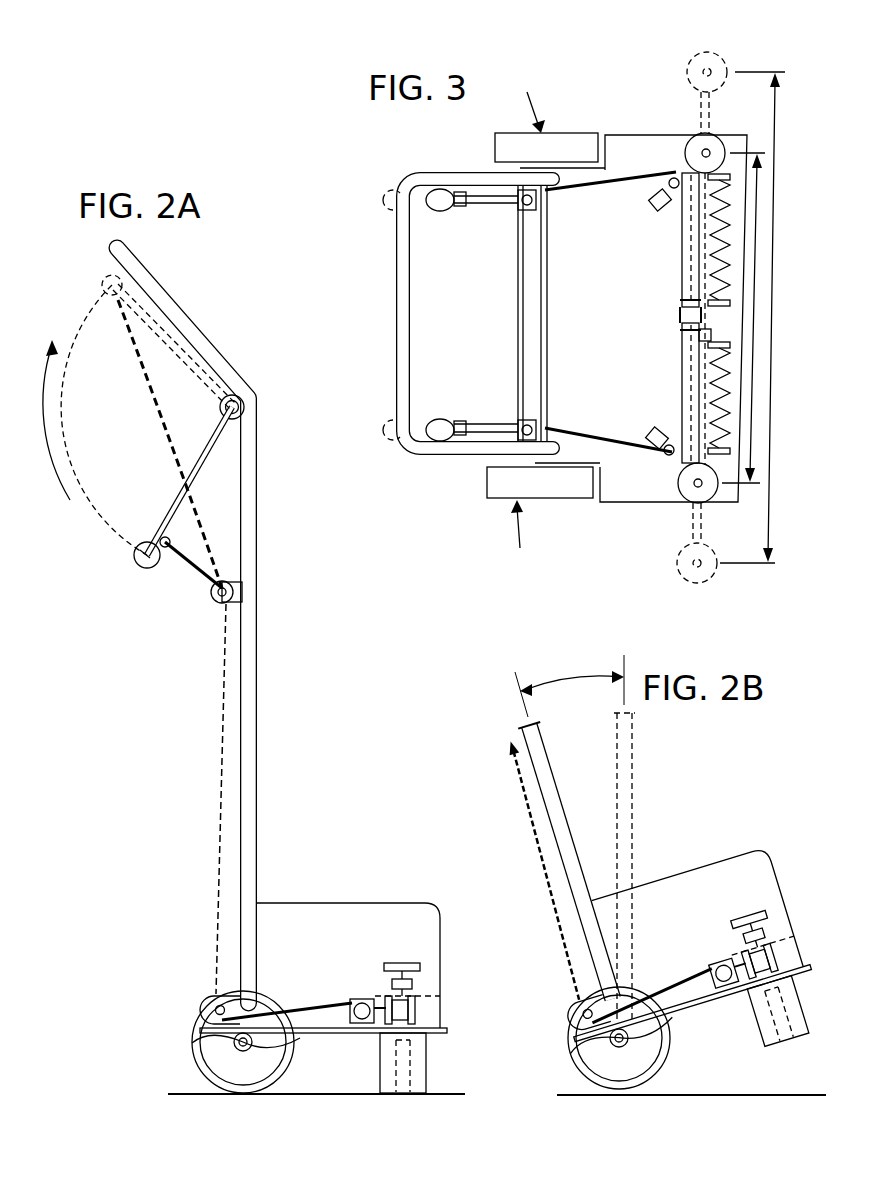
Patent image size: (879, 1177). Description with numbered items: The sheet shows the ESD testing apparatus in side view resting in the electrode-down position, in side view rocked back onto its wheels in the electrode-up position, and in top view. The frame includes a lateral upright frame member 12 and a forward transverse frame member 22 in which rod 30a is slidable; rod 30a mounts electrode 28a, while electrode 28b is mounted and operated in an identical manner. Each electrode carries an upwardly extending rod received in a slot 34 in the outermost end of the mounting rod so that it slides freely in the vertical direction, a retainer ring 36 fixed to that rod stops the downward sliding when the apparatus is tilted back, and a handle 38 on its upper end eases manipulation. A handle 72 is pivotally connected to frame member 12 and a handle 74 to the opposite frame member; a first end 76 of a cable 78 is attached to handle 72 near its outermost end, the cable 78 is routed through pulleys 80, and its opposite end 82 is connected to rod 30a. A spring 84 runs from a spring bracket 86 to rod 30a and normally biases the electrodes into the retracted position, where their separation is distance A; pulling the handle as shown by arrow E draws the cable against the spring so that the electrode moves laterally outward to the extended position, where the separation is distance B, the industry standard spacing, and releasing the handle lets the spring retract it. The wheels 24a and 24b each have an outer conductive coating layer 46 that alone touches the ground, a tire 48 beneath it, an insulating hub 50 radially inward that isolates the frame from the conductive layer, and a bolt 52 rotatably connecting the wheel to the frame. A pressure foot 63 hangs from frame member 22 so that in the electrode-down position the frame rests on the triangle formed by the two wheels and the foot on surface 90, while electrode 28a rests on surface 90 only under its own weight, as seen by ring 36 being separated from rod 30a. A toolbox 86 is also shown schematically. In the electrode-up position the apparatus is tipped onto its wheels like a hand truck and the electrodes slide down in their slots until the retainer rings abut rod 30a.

In FIG. 2A, the lateral upright frame member 12 is at (258, 705).
In FIG. 2B, the lateral upright frame member 12 is at (548, 770).
In FIG. 3, the lateral upright frame member 12 is at (478, 313).
In FIG. 2A, the forward transverse frame member 22 is at (430, 996).
In FIG. 2B, the forward transverse frame member 22 is at (785, 965).
In FIG. 3, the forward transverse frame member 22 is at (680, 287).
In FIG. 3, the wheel 24a is at (525, 536).
In FIG. 3, the wheel 24b is at (540, 101).
In FIG. 2A, the electrode 28a is at (385, 1055).
In FIG. 2B, the electrode 28a is at (760, 1040).
In FIG. 3, the electrode 28a is at (685, 492).
In FIG. 3, the electrode 28b is at (685, 75).
In FIG. 2A, the rod 30a is at (418, 1012).
In FIG. 2B, the rod 30a is at (735, 993).
In FIG. 3, the rod 30a is at (715, 340).
In FIG. 2A, the slot 34 is at (395, 998).
In FIG. 2B, the slot 34 is at (740, 975).
In FIG. 2A, the retainer ring 36 is at (415, 988).
In FIG. 2B, the retainer ring 36 is at (775, 950).
In FIG. 2A, the handle 38 is at (410, 965).
In FIG. 2B, the handle 38 is at (760, 928).
In FIG. 2A, the conductive coating layer 46 is at (272, 1095).
In FIG. 2B, the conductive coating layer 46 is at (643, 1090).
In FIG. 3, the conductive coating layer 46 is at (500, 145).
In FIG. 2A, the tire 48 is at (212, 1100).
In FIG. 2B, the tire 48 is at (612, 1090).
In FIG. 2A, the insulating hub 50 is at (225, 1063).
In FIG. 2B, the insulating hub 50 is at (586, 1088).
In FIG. 2A, the bolt 52 is at (236, 1042).
In FIG. 2B, the bolt 52 is at (600, 1065).
In FIG. 2A, the pressure foot 63 is at (430, 1052).
In FIG. 2B, the pressure foot 63 is at (795, 1001).
In FIG. 2A, the handle 72 is at (105, 286).
In FIG. 3, the handle 72 is at (385, 425).
In FIG. 3, the handle 74 is at (385, 200).
In FIG. 2A, the first end of cable 76 is at (163, 558).
In FIG. 3, the first end of cable 76 is at (462, 420).
In FIG. 2A, the cable 78 is at (218, 790).
In FIG. 2B, the cable 78 is at (528, 812).
In FIG. 3, the cable 78 is at (598, 190).
In FIG. 2A, the pulleys 80 is at (213, 603).
In FIG. 2B, the pulleys 80 is at (720, 983).
In FIG. 3, the pulleys 80 is at (525, 207).
In FIG. 3, the opposite end of cable 82 is at (690, 298).
In FIG. 3, the spring 84 is at (730, 250).
In FIG. 2A, the toolbox 86 is at (320, 905).
In FIG. 2B, the toolbox 86 is at (715, 868).
In FIG. 3, the toolbox 86 is at (662, 318).
In FIG. 2A, the surface 90 is at (425, 1093).
In FIG. 2B, the surface 90 is at (690, 1095).
In FIG. 3, the distance A is at (760, 290).
In FIG. 3, the distance B is at (775, 400).
In FIG. 2A, the arrow E is at (48, 455).